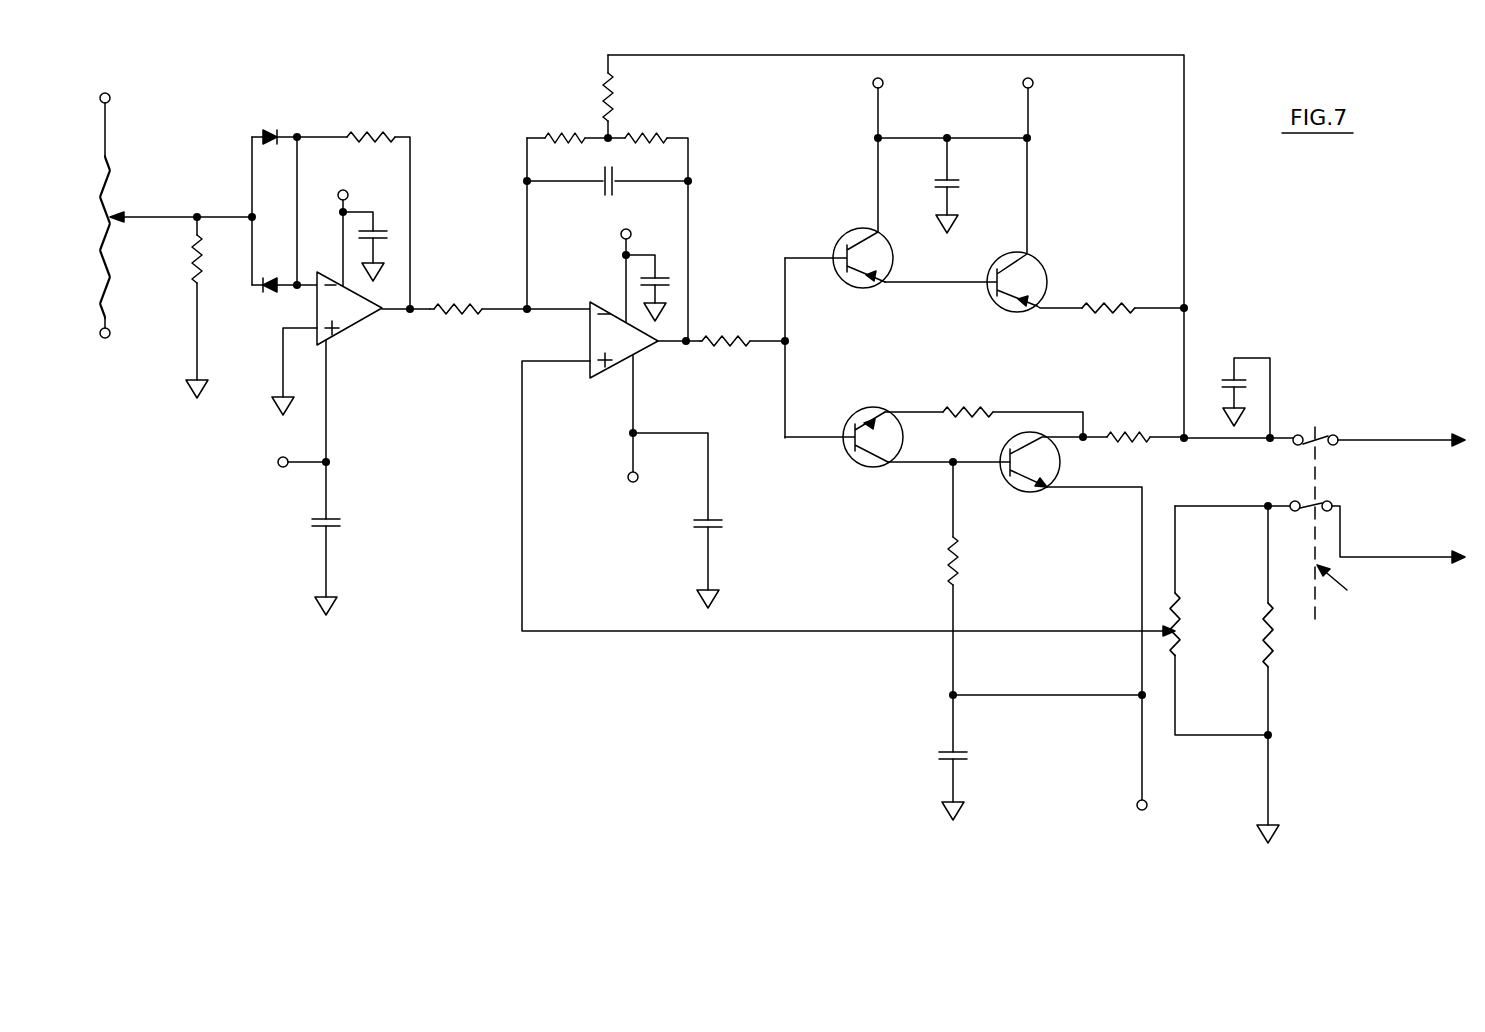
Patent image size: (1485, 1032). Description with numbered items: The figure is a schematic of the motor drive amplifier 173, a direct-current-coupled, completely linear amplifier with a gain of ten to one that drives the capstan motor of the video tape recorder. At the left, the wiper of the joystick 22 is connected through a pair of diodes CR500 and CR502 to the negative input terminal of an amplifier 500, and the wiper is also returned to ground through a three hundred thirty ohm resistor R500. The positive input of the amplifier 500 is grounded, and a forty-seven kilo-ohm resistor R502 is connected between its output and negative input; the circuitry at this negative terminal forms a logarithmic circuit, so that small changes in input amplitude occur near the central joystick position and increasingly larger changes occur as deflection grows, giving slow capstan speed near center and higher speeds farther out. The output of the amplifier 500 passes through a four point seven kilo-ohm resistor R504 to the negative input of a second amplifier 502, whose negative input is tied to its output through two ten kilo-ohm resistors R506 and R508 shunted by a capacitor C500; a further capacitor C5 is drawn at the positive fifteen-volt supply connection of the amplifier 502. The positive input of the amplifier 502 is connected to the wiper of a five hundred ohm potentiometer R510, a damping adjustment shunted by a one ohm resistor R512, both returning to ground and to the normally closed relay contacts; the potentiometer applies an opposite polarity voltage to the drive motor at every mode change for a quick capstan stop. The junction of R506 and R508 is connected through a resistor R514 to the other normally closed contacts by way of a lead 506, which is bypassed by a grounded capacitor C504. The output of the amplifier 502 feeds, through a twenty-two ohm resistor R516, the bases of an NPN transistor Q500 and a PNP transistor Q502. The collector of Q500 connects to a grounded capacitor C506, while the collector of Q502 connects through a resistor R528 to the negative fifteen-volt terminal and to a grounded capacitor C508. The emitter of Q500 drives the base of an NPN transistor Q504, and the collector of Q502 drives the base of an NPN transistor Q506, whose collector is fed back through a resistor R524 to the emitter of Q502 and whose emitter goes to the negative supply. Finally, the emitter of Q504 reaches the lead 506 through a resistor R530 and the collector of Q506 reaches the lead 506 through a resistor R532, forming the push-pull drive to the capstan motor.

The motor drive amplifier 173 is at (786, 439).
The joystick 22 is at (112, 178).
The grounded resistor R500 is at (197, 264).
The diode CR500 is at (269, 130).
The diode CR502 is at (262, 288).
The resistor R502 is at (352, 131).
The amplifier 500 is at (362, 318).
The resistor R504 is at (430, 309).
The resistor R506 is at (568, 130).
The resistor R508 is at (628, 132).
The resistor R514 is at (600, 70).
The capacitor C500 is at (597, 186).
The second amplifier 502 is at (632, 346).
The capacitor C5 is at (665, 278).
The resistor R516 is at (752, 320).
The transistor Q500 is at (882, 248).
The grounded capacitor C506 is at (980, 104).
The transistor Q504 is at (1028, 264).
The resistor R530 is at (1100, 312).
The lead 506 is at (1185, 210).
The transistor Q502 is at (870, 456).
The resistor R524 is at (952, 408).
The transistor Q506 is at (1035, 487).
The resistor R532 is at (1152, 418).
The resistor R528 is at (957, 556).
The grounded capacitor C508 is at (943, 764).
The grounded capacitor C504 is at (1250, 390).
The potentiometer R510 is at (1178, 598).
The resistor R512 is at (1274, 650).